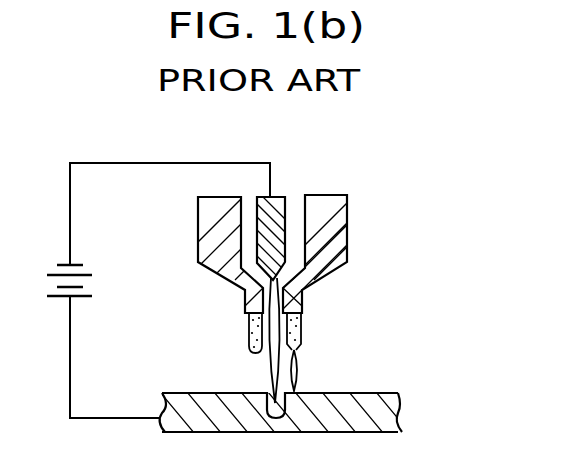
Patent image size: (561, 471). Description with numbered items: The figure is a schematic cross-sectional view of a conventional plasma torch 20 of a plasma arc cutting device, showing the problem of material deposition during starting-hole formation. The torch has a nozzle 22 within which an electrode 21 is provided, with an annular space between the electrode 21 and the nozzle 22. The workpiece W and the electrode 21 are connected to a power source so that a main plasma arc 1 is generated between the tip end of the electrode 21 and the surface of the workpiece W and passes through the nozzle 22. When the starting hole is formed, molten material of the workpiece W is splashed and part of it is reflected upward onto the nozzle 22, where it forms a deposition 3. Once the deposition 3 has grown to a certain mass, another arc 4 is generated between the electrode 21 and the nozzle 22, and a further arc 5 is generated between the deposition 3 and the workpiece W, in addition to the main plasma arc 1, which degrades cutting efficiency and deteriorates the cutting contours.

The main plasma arc 1 is at (270, 367).
The deposition 3 is at (250, 332).
The arc 4 is at (305, 282).
The arc 5 is at (292, 370).
The plasma torch 20 is at (437, 194).
The electrode 21 is at (280, 201).
The nozzle 22 is at (345, 250).
The workpiece W is at (387, 418).